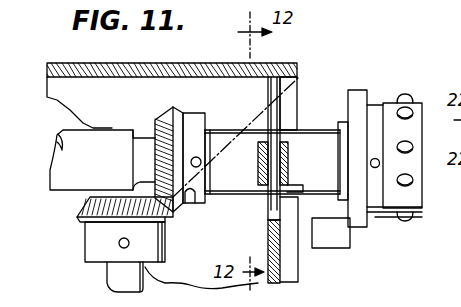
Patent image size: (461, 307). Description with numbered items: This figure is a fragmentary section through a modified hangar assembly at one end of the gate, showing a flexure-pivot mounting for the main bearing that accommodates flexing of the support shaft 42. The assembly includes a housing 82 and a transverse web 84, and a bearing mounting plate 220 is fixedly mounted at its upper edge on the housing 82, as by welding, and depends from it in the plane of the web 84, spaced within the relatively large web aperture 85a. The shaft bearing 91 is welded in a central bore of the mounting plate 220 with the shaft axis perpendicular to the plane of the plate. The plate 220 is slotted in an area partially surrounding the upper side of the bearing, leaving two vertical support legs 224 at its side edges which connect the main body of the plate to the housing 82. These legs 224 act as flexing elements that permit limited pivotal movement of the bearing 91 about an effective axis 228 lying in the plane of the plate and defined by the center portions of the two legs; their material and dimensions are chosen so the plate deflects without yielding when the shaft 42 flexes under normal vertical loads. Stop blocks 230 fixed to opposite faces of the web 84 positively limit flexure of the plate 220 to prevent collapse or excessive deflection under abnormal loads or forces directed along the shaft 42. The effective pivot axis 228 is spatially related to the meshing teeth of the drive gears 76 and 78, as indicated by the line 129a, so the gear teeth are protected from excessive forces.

The housing 82 is at (226, 63).
The support shaft 42 is at (117, 130).
The drive gear 78 is at (168, 117).
The drive gear 76 is at (85, 222).
The line 129a is at (190, 205).
The main bearing 91 is at (257, 193).
The stop blocks 230 is at (247, 143).
The support legs 224 is at (288, 162).
The effective axis 228 is at (297, 80).
The bearing mounting plate 220 is at (297, 190).
The transverse web 84 is at (268, 242).
The web aperture 85a is at (288, 217).